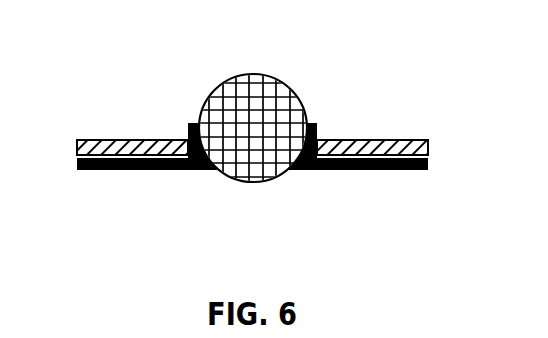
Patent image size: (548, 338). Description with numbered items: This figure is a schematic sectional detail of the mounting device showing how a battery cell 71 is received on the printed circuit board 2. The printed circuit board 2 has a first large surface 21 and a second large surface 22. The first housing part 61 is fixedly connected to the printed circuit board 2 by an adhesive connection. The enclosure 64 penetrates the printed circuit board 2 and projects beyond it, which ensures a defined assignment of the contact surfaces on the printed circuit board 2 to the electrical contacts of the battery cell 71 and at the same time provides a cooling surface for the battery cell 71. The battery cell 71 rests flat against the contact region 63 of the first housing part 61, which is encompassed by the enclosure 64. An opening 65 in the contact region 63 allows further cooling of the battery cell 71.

The printed circuit board 2 is at (249, 135).
The first large surface 21 is at (162, 139).
The second large surface 22 is at (128, 170).
The first housing part 61 is at (378, 172).
The contact region 63 is at (249, 104).
The enclosure 64 is at (315, 122).
The opening 65 is at (218, 168).
The battery cell 71 is at (238, 113).